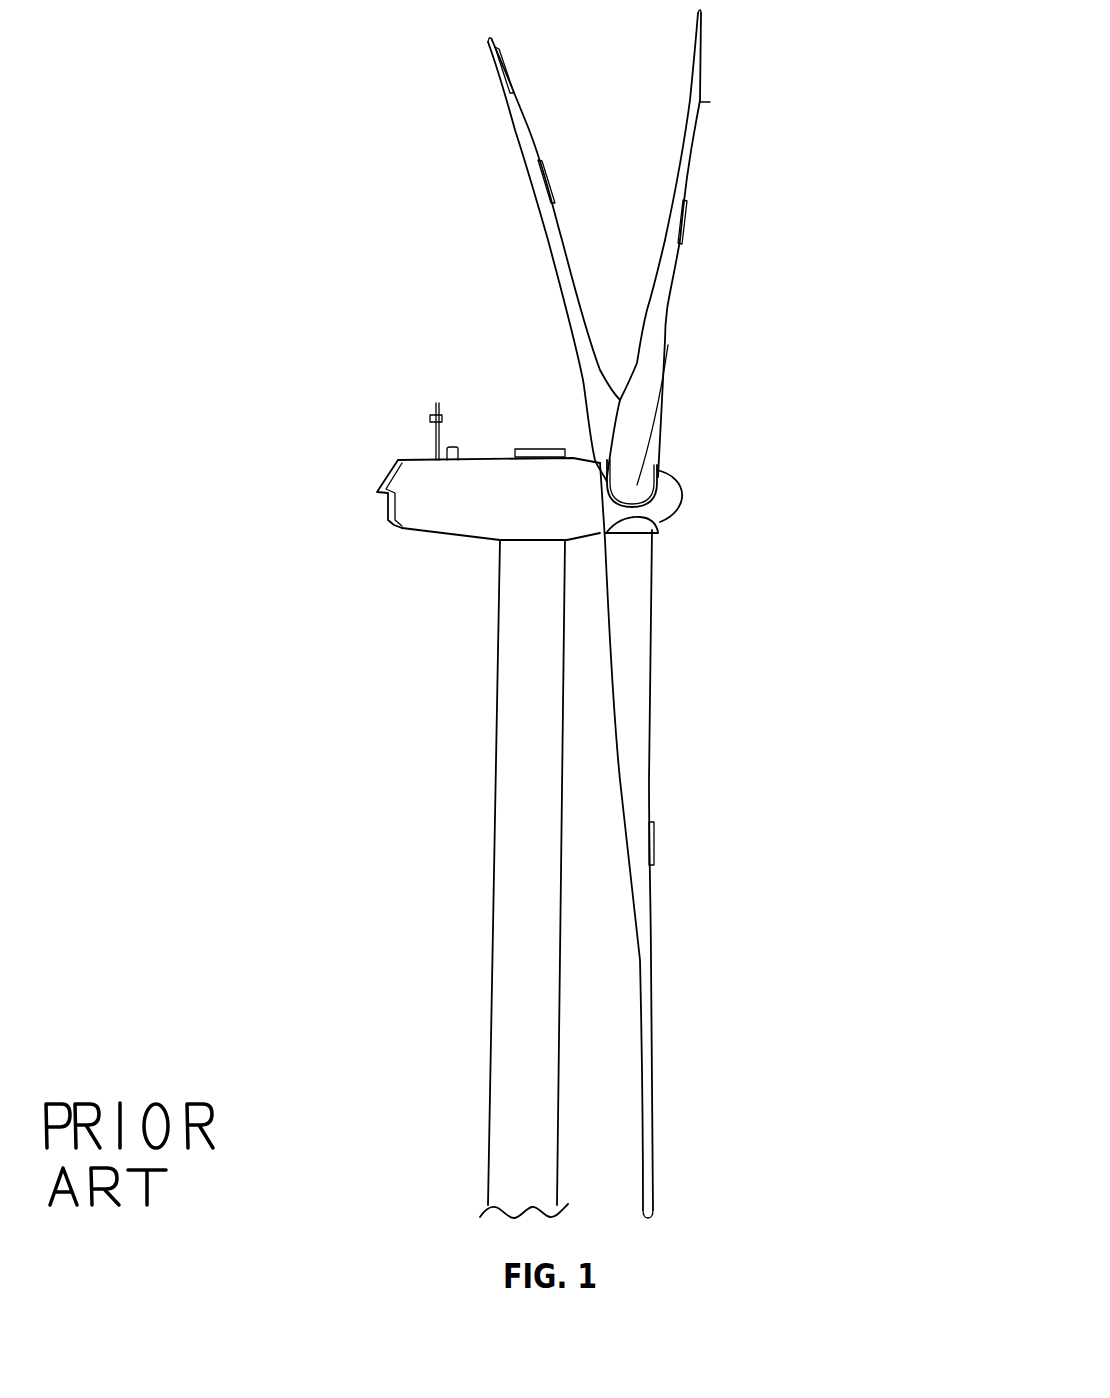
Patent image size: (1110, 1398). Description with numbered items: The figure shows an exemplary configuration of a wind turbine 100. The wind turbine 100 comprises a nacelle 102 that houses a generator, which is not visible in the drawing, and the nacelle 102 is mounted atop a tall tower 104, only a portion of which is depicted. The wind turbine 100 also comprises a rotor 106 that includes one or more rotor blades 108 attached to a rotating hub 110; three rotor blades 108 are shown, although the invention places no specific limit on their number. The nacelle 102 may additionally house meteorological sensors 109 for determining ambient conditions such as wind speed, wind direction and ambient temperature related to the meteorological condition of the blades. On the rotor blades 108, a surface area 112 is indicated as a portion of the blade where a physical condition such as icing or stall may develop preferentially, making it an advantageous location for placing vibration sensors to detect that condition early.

The wind turbine 100 is at (343, 256).
The nacelle 102 is at (448, 535).
The tower 104 is at (495, 823).
The rotor 106 is at (762, 291).
The rotor blades 108 is at (525, 127).
The meteorological sensors 109 is at (442, 432).
The rotating hub 110 is at (678, 510).
The surface area 112 is at (508, 70).